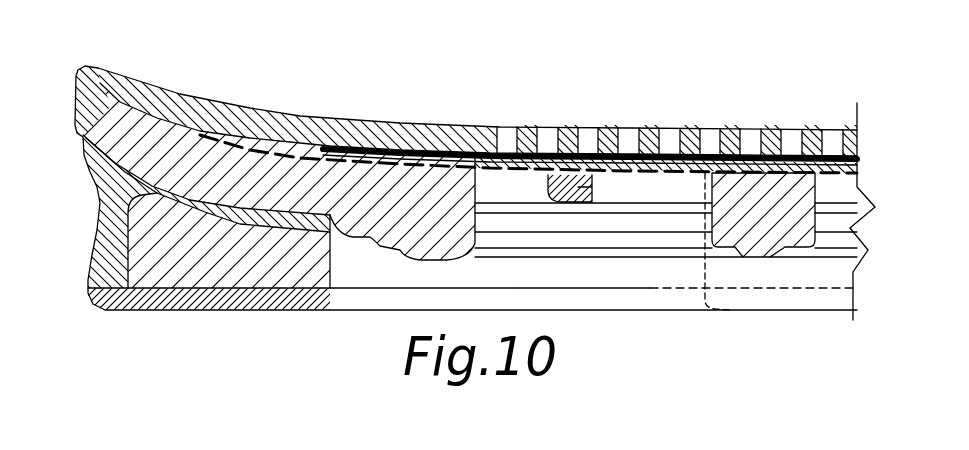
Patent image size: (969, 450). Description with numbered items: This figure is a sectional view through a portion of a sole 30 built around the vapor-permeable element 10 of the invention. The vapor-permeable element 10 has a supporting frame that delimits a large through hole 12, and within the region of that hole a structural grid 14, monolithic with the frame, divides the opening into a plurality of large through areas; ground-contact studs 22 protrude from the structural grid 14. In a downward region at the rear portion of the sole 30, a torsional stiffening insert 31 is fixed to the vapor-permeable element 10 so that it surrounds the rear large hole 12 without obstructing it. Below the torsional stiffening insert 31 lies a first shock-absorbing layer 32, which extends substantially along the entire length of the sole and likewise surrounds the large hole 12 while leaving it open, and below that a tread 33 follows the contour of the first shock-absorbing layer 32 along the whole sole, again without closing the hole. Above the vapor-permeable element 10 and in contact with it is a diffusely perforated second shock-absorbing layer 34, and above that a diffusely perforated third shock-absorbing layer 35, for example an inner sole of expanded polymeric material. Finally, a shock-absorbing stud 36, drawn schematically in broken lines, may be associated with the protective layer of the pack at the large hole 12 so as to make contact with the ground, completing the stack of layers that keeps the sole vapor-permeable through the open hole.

The vapor-permeable element 10 is at (80, 126).
The large through hole 12 is at (629, 243).
The structural grid 14 is at (582, 196).
The stud 22 is at (762, 255).
The sole 30 is at (563, 108).
The torsional stiffening insert 31 is at (122, 302).
The first shock-absorbing layer 32 is at (198, 270).
The tread 33 is at (238, 312).
The second shock-absorbing layer 34 is at (378, 144).
The third shock-absorbing layer 35 is at (457, 133).
The shock-absorbing stud 36 is at (705, 258).